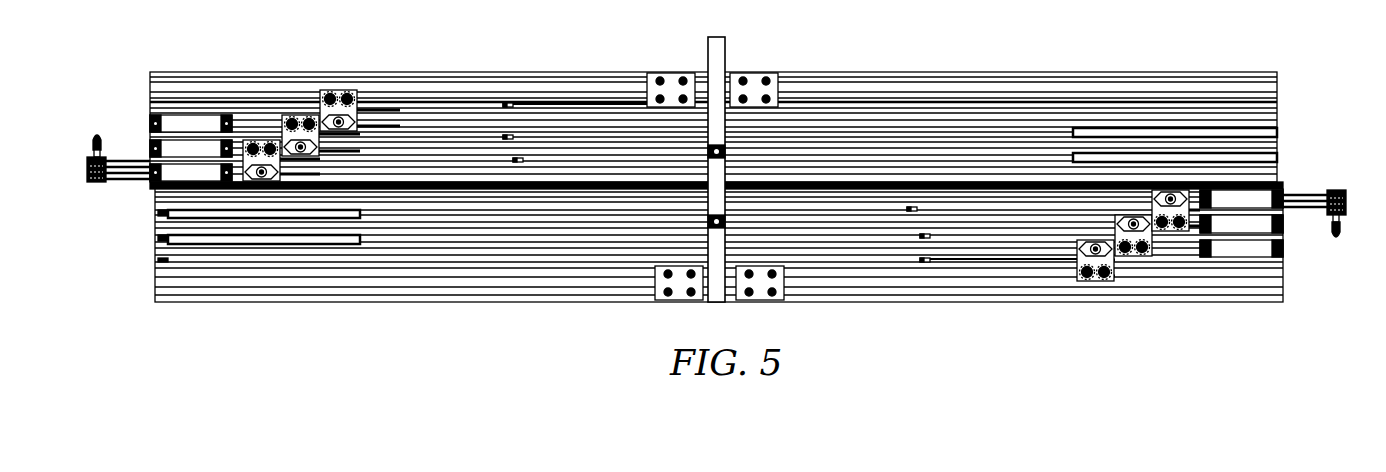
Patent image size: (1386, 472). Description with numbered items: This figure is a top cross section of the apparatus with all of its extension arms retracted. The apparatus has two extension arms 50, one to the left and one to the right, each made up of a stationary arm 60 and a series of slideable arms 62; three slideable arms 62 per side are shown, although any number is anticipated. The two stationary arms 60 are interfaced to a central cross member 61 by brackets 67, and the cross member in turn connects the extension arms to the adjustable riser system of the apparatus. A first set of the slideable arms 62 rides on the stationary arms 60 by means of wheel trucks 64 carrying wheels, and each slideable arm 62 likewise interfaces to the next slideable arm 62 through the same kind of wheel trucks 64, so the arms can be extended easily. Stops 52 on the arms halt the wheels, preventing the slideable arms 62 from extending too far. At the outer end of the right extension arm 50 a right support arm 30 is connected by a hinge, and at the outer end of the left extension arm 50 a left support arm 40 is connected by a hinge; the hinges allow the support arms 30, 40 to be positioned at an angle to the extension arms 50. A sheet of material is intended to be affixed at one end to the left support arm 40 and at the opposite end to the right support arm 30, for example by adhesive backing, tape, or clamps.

The right support arm 30 is at (1341, 228).
The left support arm 40 is at (92, 148).
The extension arm 50 is at (988, 42).
The stop 52 is at (505, 106).
The stationary arm 60 is at (178, 77).
The cross member 61 is at (727, 38).
The slideable arm 62 is at (1277, 126).
The wheel truck 64 is at (262, 141).
The bracket 67 is at (674, 90).